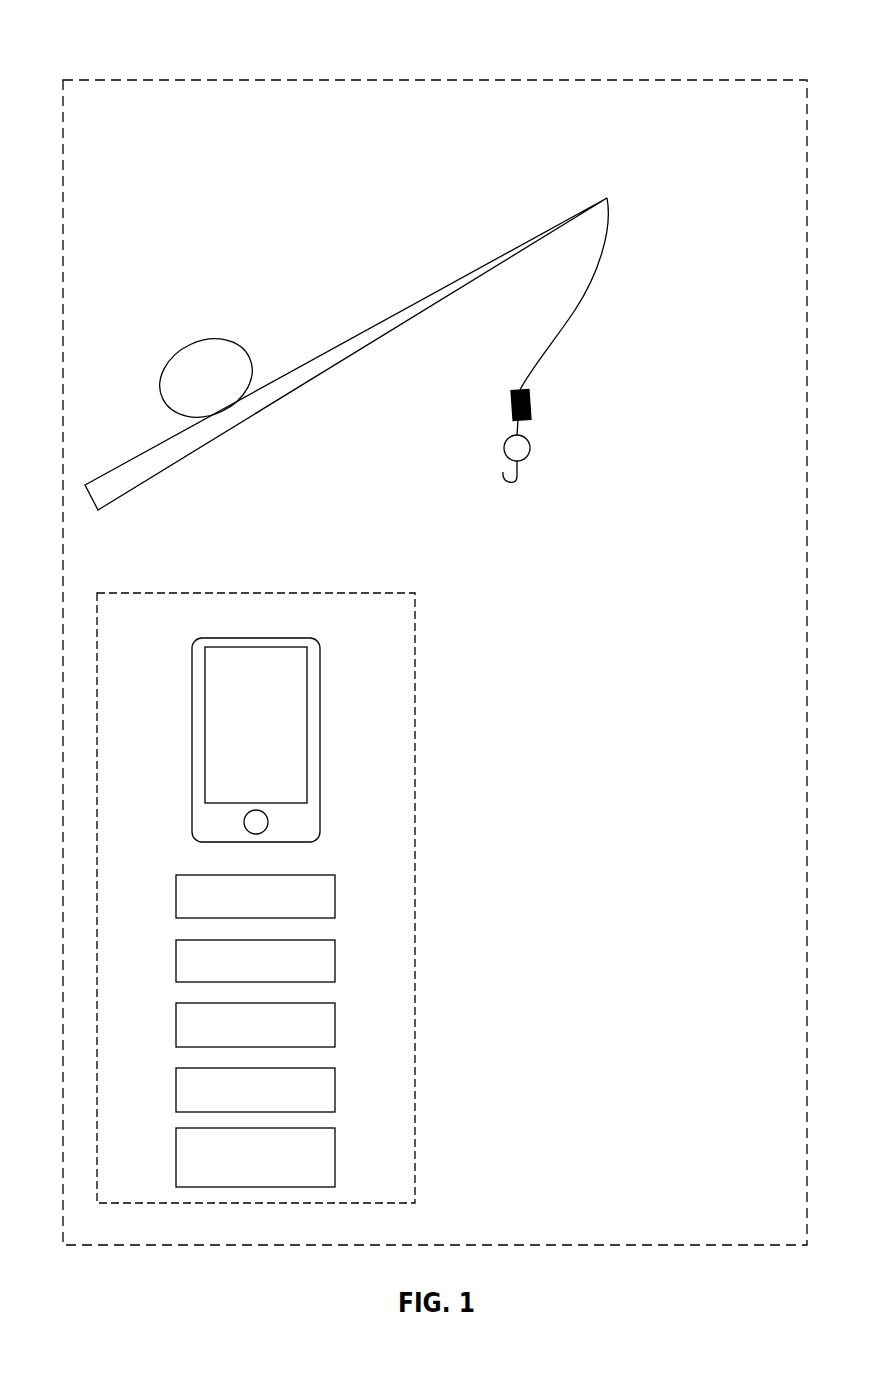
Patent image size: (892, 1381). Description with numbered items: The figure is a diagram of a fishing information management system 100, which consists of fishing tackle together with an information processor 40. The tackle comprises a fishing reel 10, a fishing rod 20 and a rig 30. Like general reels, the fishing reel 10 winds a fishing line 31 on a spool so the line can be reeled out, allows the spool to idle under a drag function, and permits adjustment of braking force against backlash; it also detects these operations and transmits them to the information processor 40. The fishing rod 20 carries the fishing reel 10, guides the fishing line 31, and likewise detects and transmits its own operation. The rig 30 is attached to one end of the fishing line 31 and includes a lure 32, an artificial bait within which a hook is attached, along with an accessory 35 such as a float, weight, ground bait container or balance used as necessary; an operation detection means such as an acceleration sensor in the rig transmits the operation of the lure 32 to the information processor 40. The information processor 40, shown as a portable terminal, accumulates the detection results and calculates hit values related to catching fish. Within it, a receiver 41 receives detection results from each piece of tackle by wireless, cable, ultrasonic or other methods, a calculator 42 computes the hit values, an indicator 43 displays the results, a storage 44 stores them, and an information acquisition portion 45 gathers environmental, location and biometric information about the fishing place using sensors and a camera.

The fishing information management system 100 is at (654, 78).
The fishing reel 10 is at (200, 363).
The fishing rod 20 is at (457, 278).
The rig 30 is at (678, 385).
The fishing line 31 is at (548, 340).
The lure 32 is at (530, 447).
The float, weight, ground bait container or balance 35 is at (512, 401).
The information processor 40 is at (325, 592).
The receiver 41 is at (335, 896).
The calculator 42 is at (335, 961).
The indicator 43 is at (335, 1025).
The storage 44 is at (335, 1090).
The information acquisition portion 45 is at (335, 1157).